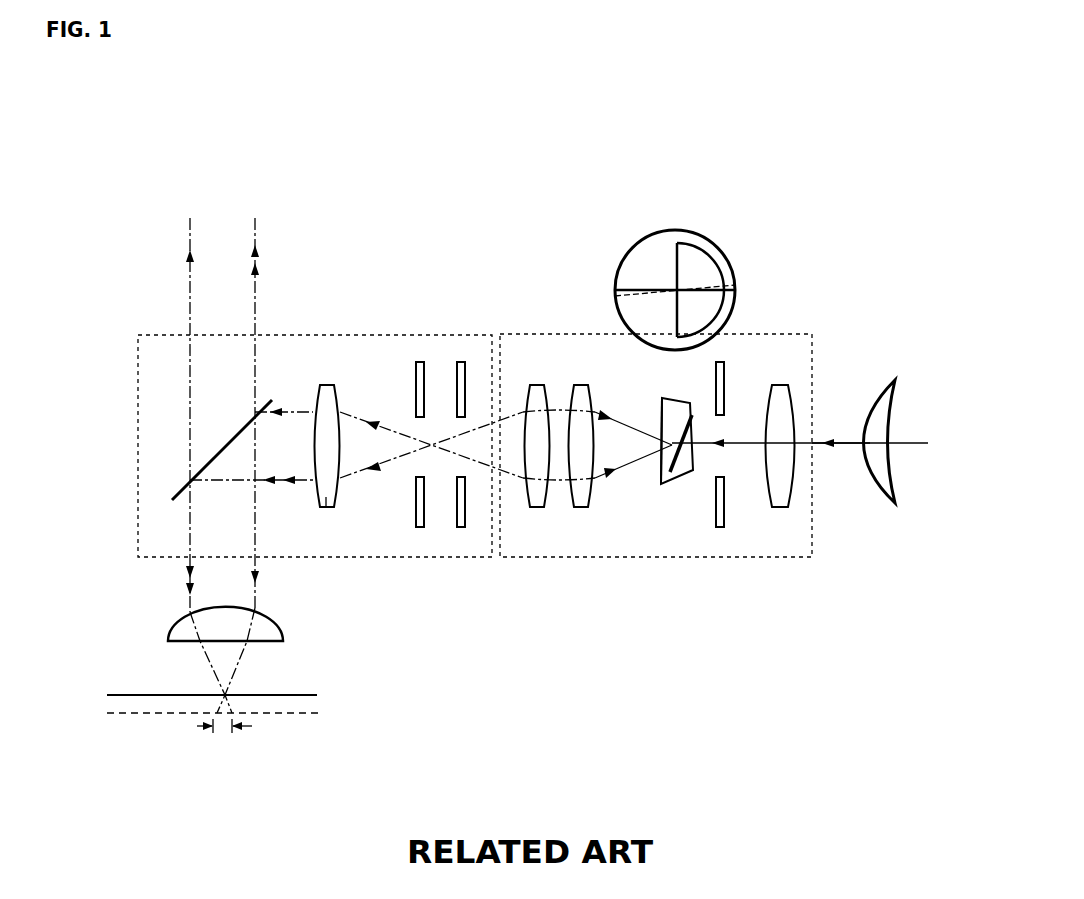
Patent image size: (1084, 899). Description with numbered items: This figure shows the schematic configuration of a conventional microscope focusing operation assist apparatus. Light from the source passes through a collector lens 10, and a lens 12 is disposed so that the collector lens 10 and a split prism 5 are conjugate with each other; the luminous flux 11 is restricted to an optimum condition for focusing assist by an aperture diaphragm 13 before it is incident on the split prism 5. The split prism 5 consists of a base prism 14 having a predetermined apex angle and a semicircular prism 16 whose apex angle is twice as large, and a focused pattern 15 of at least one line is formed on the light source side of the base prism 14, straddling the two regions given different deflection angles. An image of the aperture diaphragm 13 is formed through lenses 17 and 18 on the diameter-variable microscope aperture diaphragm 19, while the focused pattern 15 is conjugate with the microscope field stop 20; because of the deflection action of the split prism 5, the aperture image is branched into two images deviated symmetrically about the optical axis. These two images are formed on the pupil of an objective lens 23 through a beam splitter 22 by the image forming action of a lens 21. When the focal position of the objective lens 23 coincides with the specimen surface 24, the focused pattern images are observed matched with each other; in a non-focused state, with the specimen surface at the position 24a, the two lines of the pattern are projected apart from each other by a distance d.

The split prism 5 is at (658, 405).
The collector lens 10 is at (880, 490).
The measuring light beam 11 is at (853, 447).
The lens 12 is at (780, 507).
The aperture diaphragm 13 is at (722, 527).
The base prism 14 is at (662, 465).
The focused pattern 15 is at (637, 290).
The semicircular prism 16 is at (682, 463).
The lens 17 is at (581, 507).
The lens 18 is at (537, 507).
The microscope aperture diaphragm 19 is at (461, 527).
The microscope field stop 20 is at (420, 527).
The lens 21 is at (326, 507).
The beam splitter 22 is at (266, 396).
The objective lens 23 is at (268, 628).
The specimen surface 24 is at (318, 695).
The non-focused specimen surface position 24a is at (318, 713).
The separation distance d is at (224, 739).